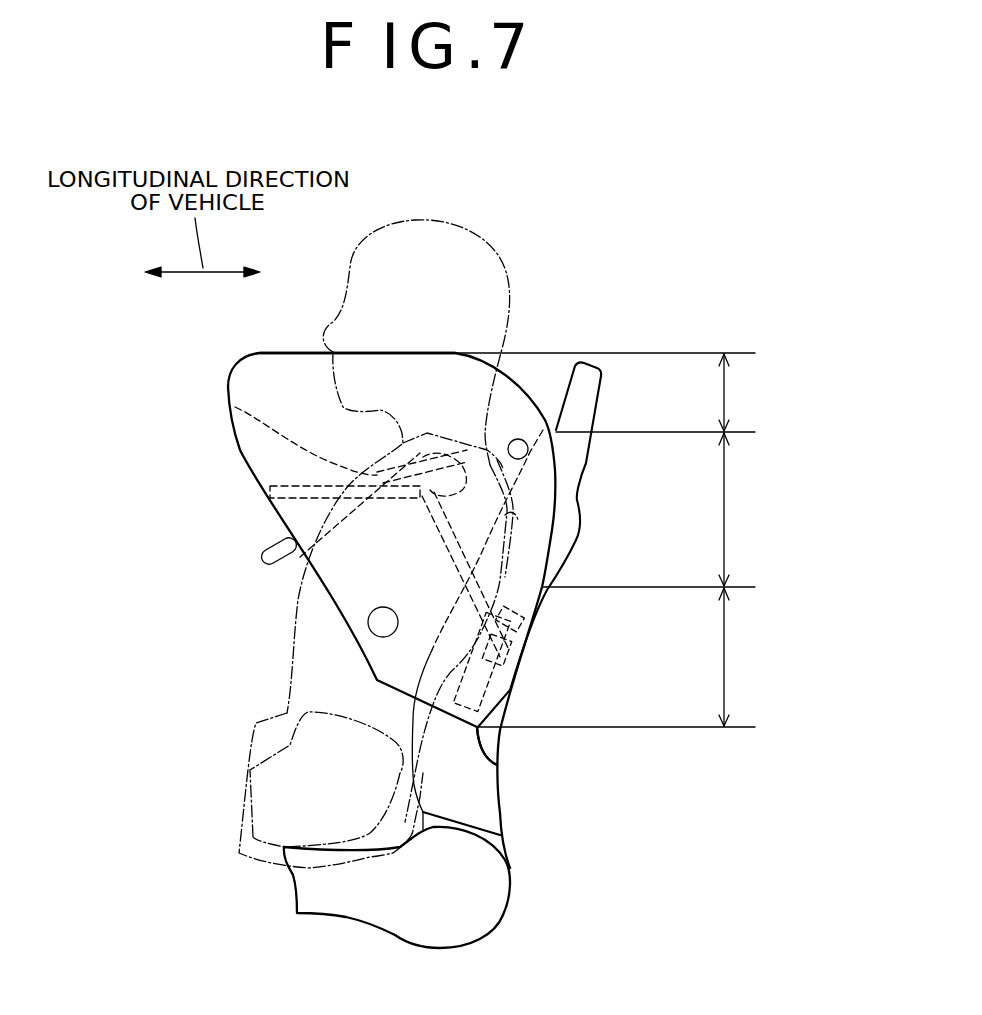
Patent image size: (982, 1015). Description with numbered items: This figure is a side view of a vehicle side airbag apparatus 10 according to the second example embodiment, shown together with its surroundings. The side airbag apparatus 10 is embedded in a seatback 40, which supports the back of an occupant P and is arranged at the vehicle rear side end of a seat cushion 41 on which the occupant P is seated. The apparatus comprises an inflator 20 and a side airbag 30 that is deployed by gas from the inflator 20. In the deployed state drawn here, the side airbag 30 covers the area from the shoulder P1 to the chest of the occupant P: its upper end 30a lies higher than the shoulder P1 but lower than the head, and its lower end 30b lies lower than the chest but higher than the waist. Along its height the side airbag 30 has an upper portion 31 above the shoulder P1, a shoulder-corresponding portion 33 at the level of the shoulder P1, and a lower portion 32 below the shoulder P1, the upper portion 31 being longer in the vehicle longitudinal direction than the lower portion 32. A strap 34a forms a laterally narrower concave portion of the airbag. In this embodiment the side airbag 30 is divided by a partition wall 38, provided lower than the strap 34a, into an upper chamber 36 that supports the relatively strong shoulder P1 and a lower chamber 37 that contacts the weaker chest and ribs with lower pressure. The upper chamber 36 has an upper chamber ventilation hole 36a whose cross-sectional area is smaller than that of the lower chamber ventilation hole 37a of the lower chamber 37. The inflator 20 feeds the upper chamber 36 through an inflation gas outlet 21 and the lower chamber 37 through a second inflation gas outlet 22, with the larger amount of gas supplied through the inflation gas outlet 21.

The side airbag apparatus 10 is at (375, 610).
The inflator 20 is at (478, 694).
The inflation gas outlet 21 is at (518, 610).
The second inflation gas outlet 22 is at (500, 663).
The side airbag 30 is at (232, 420).
The upper end 30a is at (373, 353).
The lower end 30b is at (497, 765).
The upper portion 31 is at (724, 392).
The lower portion 32 is at (724, 655).
The shoulder-corresponding portion 33 is at (724, 510).
The strap 34a is at (235, 407).
The upper chamber 36 is at (277, 470).
The upper chamber ventilation hole 36a is at (519, 439).
The lower chamber 37 is at (293, 513).
The lower chamber ventilation hole 37a is at (368, 622).
The partition wall 38 is at (278, 497).
The seatback 40 is at (500, 813).
The seat cushion 41 is at (480, 908).
The occupant P is at (487, 277).
The shoulder P1 is at (513, 517).